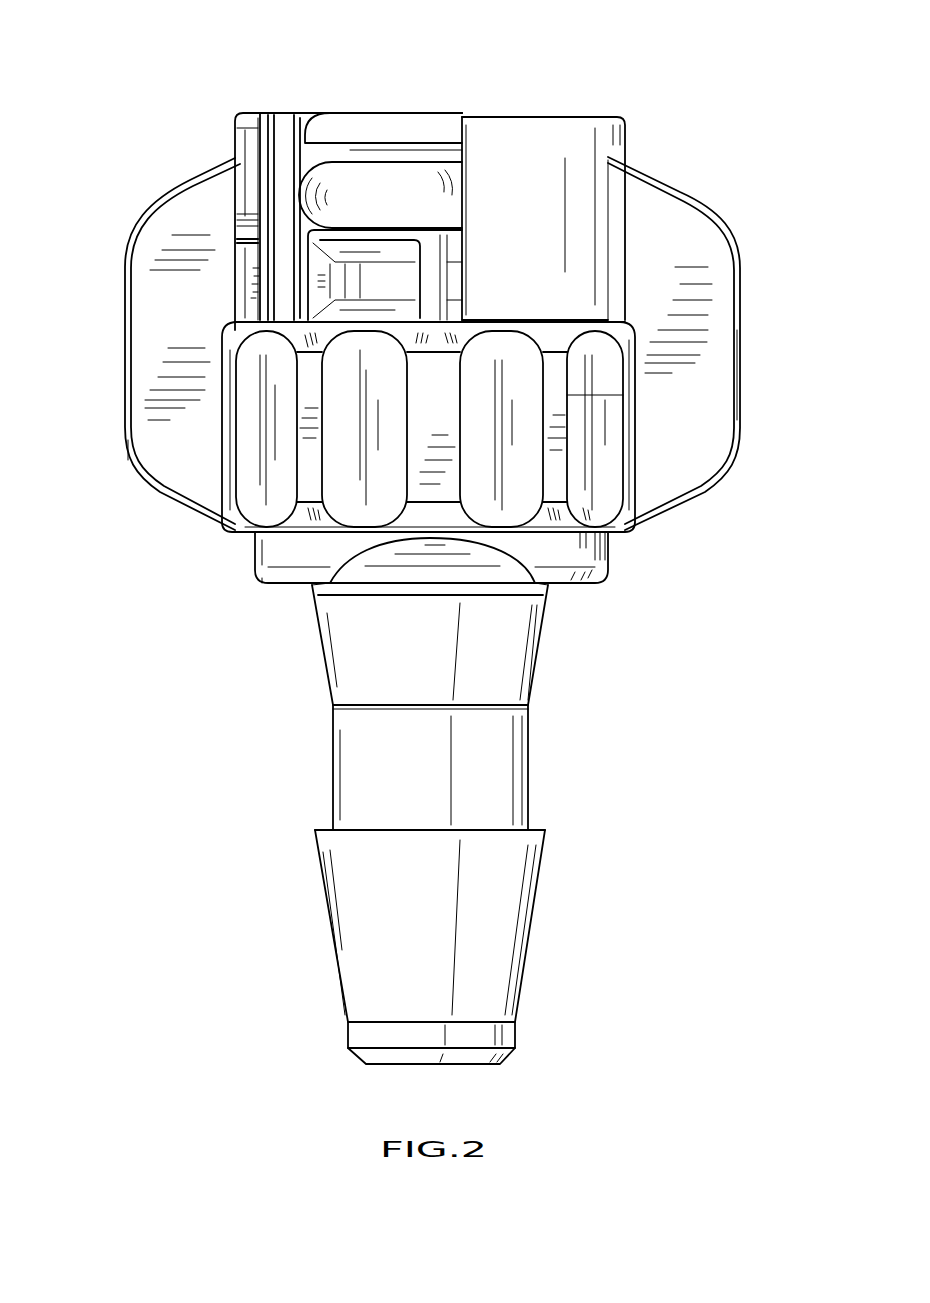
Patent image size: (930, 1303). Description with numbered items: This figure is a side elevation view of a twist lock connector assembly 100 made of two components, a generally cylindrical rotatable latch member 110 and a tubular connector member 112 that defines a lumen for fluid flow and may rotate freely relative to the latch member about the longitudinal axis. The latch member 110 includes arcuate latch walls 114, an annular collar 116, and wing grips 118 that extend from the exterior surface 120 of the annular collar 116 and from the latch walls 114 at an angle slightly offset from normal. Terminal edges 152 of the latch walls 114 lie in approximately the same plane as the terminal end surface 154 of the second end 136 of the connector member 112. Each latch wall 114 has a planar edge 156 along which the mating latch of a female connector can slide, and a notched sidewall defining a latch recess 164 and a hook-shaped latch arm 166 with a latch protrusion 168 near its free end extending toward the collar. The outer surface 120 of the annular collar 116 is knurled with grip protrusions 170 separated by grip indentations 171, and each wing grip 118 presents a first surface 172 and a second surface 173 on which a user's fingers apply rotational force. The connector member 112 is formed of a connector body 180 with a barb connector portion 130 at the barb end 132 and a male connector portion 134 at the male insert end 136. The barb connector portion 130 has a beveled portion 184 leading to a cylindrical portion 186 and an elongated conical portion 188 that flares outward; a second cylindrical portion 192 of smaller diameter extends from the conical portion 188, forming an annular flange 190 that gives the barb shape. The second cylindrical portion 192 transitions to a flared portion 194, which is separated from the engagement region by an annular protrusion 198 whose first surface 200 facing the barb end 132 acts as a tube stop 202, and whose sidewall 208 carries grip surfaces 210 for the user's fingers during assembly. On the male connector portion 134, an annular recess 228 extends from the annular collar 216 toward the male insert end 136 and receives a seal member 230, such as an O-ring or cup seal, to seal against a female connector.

The connector assembly 100 is at (157, 79).
The rotatable latch member 110 is at (703, 163).
The connector member 112 is at (292, 690).
The latch walls 114 is at (240, 152).
The annular collar 116 is at (608, 487).
The wing grips 118 is at (710, 242).
The exterior surface of the annular collar 120 is at (572, 532).
The barb connector portion 130 is at (335, 916).
The barb end 132 is at (366, 1070).
The male connector portion 134 is at (502, 112).
The male insert end 136 is at (294, 104).
The terminal edges 152 is at (258, 117).
The terminal end surface 154 is at (345, 112).
The planar edge 156 is at (452, 208).
The latch recess 164 is at (245, 276).
The latch arm 166 is at (262, 125).
The latch protrusion 168 is at (240, 220).
The grip protrusions 170 is at (562, 391).
The grip indentations 171 is at (246, 515).
The first surface 172 is at (173, 498).
The second surface 173 is at (713, 440).
The connector body 180 is at (528, 782).
The beveled portion 184 is at (504, 1058).
The cylindrical portion 186 is at (518, 1035).
The conical portion 188 is at (532, 940).
The annular flange 190 is at (545, 830).
The second cylindrical portion 192 is at (532, 745).
The flared portion 194 is at (541, 668).
The annular protrusion 198 is at (565, 578).
The first surface of the annular protrusion 200 is at (312, 588).
The tube stop 202 is at (276, 585).
The sidewall 208 is at (259, 556).
The grip surfaces 210 is at (420, 575).
The annular collar 216 is at (318, 238).
The annular recess 228 is at (365, 157).
The seal member 230 is at (385, 190).